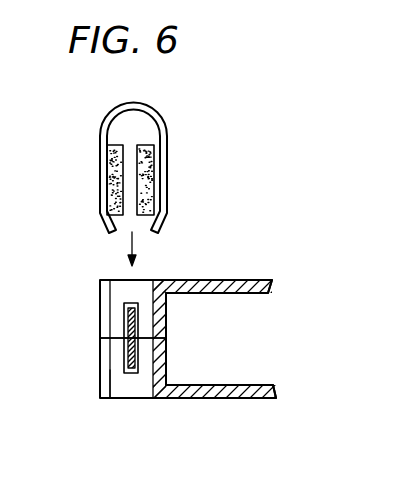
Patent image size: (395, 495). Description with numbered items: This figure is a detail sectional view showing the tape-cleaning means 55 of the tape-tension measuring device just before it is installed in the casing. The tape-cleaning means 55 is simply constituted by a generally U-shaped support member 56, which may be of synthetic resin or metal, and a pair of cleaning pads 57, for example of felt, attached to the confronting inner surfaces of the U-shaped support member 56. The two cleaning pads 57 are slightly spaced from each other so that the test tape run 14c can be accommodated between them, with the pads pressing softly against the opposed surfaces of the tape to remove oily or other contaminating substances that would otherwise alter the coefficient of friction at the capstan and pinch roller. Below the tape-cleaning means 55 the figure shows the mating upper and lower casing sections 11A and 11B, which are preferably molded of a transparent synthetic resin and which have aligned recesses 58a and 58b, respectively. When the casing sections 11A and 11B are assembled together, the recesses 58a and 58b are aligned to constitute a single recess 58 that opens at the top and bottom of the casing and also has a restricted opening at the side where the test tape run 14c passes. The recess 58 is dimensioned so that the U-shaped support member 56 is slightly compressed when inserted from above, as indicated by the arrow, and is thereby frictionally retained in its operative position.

The tape-cleaning means 55 is at (143, 168).
The U-shaped support member 56 is at (140, 114).
The cleaning pads 57 is at (113, 190).
The recess 58 is at (124, 297).
The recess of upper casing section 58a is at (142, 287).
The recess of lower casing section 58b is at (122, 387).
The test tape run 14c is at (130, 354).
The upper casing section 11A is at (250, 280).
The lower casing section 11B is at (240, 393).